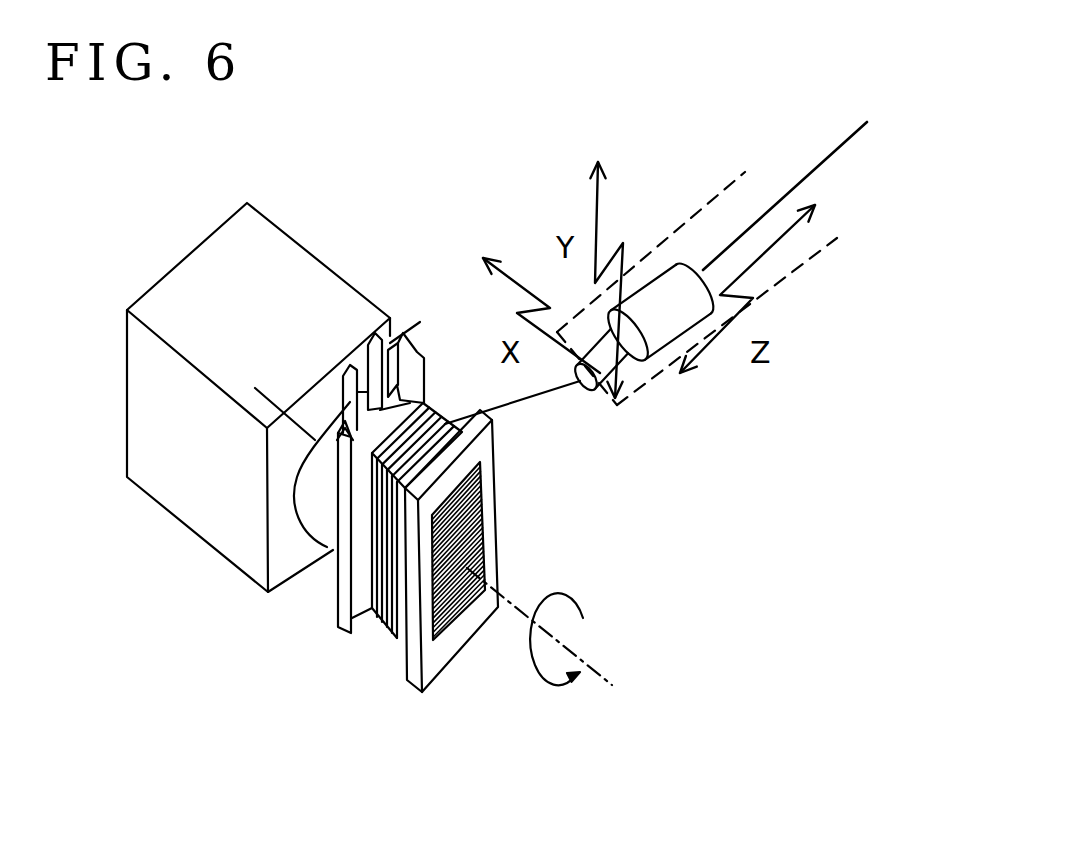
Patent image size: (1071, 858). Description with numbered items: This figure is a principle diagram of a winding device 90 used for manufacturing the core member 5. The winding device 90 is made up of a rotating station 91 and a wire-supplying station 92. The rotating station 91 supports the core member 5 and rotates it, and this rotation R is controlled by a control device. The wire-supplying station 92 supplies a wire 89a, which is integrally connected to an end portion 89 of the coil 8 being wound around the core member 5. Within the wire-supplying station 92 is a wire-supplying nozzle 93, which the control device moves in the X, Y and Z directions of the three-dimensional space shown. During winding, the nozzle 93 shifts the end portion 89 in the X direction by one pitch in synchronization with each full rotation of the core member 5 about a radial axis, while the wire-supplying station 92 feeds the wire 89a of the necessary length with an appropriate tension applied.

The core member 5 is at (382, 643).
The coil 8 is at (447, 408).
The end portion 89 is at (528, 399).
The wire 89a is at (752, 224).
The winding device 90 is at (650, 580).
The rotating station 91 is at (238, 532).
The wire-supplying station 92 is at (807, 262).
The wire-supplying nozzle 93 is at (660, 342).